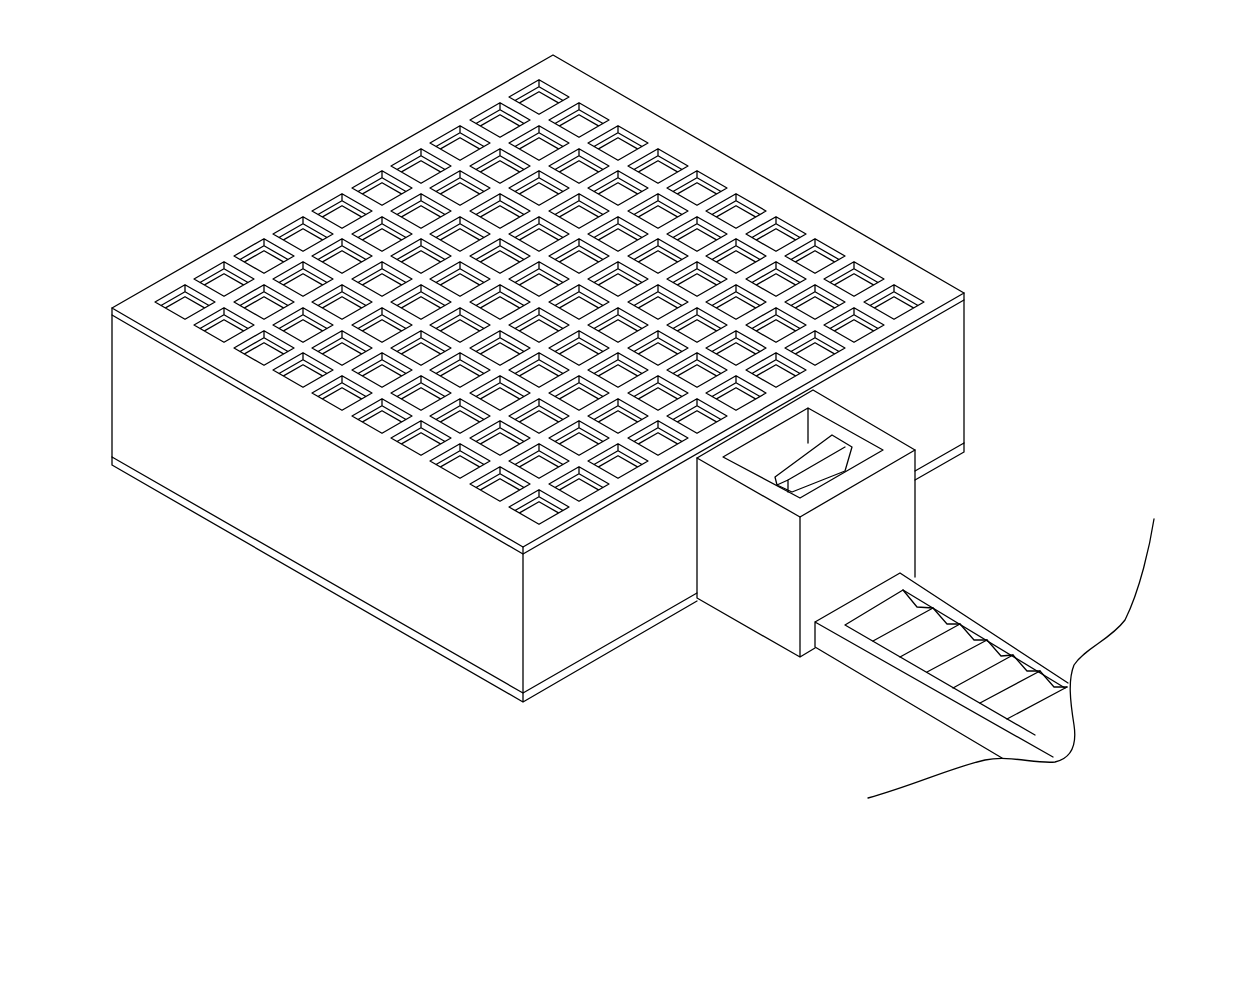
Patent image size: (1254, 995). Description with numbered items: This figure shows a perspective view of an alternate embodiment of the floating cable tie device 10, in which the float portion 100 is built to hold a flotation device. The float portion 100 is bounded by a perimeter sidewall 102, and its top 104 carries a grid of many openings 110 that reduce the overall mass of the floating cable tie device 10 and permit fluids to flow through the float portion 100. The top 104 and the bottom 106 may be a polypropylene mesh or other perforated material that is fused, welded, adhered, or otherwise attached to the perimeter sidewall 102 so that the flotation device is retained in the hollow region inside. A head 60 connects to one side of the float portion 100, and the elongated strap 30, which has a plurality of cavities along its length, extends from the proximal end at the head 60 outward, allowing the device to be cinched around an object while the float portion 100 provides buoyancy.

The floating cable tie device 10 is at (262, 155).
The float portion 100 is at (964, 322).
The top 104 is at (763, 193).
The openings 110 is at (813, 263).
The perimeter sidewall 102 is at (282, 505).
The bottom 106 is at (345, 595).
The head 60 is at (915, 515).
The strap 30 is at (985, 625).